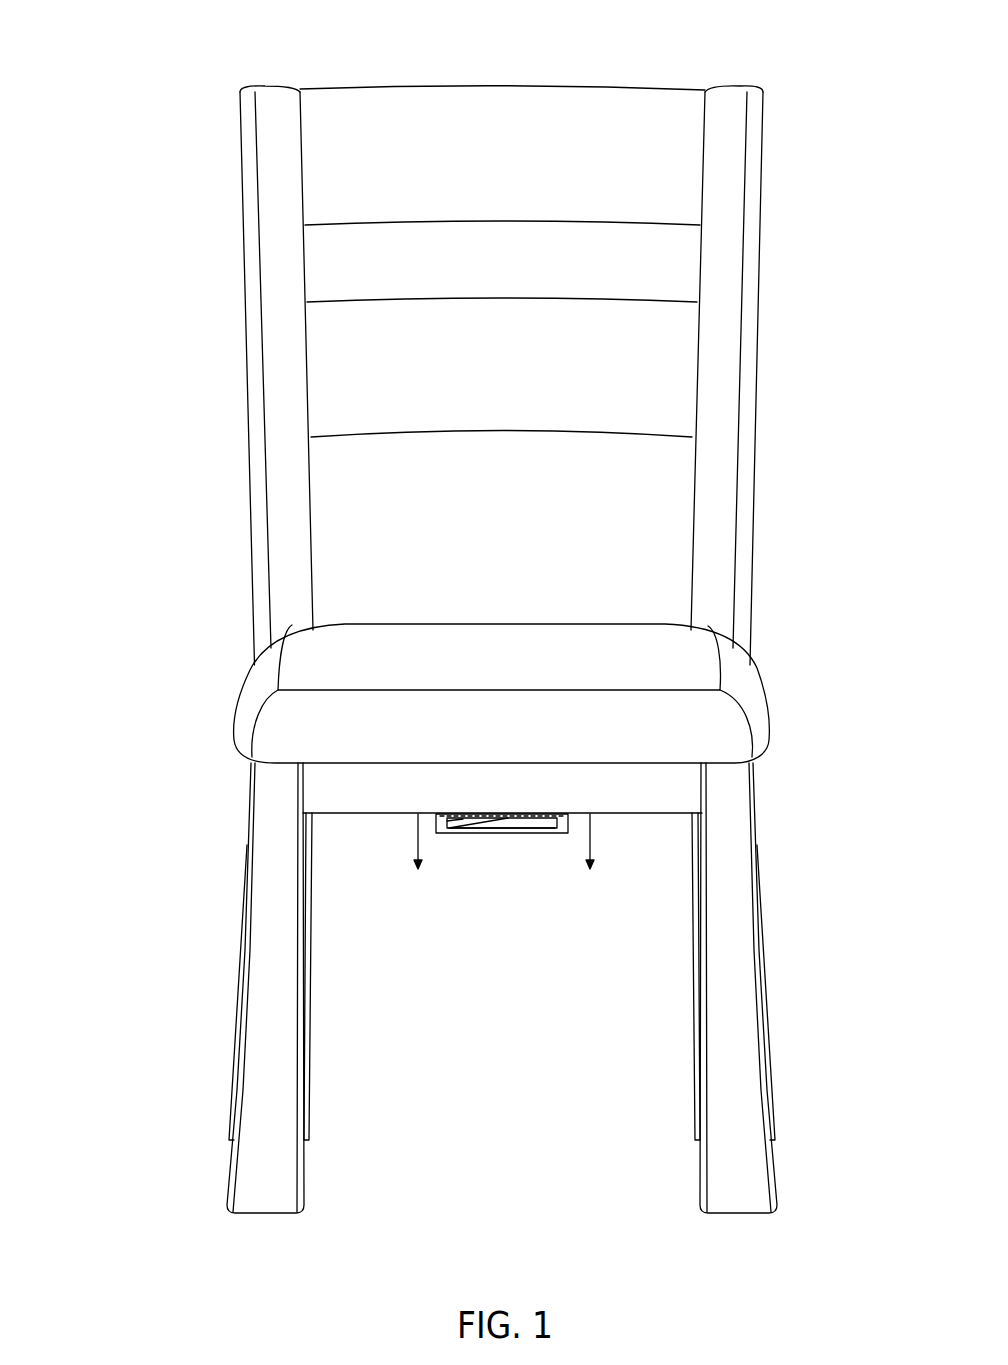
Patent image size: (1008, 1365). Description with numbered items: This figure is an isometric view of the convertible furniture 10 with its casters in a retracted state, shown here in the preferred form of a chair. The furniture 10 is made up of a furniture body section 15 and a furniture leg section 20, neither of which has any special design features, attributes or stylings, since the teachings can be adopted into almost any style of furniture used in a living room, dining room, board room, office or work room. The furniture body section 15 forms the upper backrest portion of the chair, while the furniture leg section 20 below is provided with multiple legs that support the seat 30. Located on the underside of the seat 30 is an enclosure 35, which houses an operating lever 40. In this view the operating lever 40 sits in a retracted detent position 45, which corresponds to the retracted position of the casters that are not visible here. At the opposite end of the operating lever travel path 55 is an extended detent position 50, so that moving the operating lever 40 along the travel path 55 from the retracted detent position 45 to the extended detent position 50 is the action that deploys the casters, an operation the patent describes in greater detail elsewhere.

The convertible furniture 10 is at (130, 176).
The furniture body section 15 is at (208, 70).
The furniture leg section 20 is at (208, 772).
The seat 30 is at (648, 727).
The enclosure 35 is at (538, 830).
The operating lever 40 is at (450, 825).
The retracted detent position 45 is at (452, 828).
The extended detent position 50 is at (550, 830).
The operating lever travel path 55 is at (503, 828).